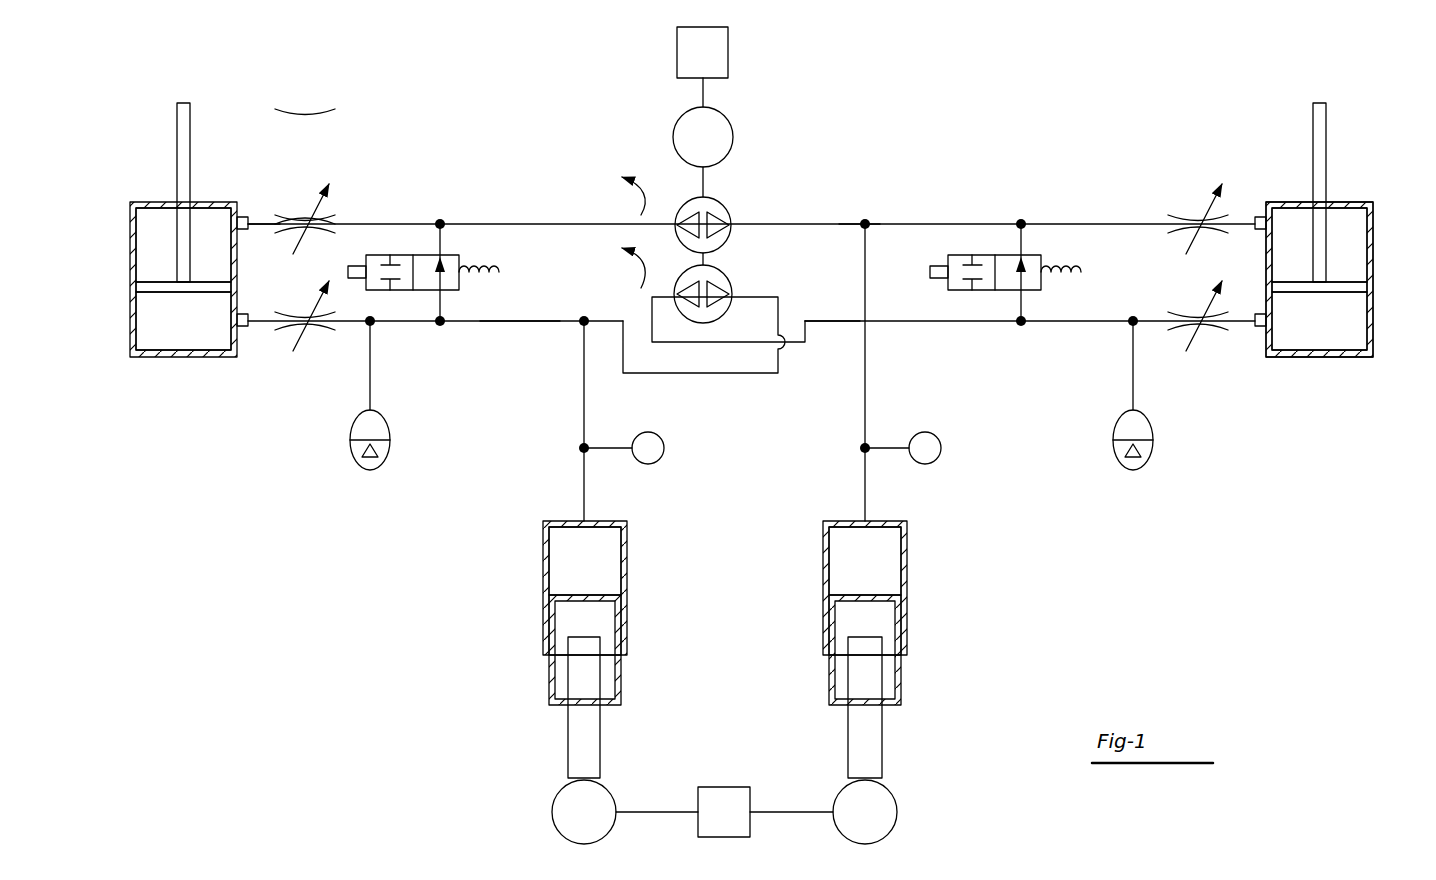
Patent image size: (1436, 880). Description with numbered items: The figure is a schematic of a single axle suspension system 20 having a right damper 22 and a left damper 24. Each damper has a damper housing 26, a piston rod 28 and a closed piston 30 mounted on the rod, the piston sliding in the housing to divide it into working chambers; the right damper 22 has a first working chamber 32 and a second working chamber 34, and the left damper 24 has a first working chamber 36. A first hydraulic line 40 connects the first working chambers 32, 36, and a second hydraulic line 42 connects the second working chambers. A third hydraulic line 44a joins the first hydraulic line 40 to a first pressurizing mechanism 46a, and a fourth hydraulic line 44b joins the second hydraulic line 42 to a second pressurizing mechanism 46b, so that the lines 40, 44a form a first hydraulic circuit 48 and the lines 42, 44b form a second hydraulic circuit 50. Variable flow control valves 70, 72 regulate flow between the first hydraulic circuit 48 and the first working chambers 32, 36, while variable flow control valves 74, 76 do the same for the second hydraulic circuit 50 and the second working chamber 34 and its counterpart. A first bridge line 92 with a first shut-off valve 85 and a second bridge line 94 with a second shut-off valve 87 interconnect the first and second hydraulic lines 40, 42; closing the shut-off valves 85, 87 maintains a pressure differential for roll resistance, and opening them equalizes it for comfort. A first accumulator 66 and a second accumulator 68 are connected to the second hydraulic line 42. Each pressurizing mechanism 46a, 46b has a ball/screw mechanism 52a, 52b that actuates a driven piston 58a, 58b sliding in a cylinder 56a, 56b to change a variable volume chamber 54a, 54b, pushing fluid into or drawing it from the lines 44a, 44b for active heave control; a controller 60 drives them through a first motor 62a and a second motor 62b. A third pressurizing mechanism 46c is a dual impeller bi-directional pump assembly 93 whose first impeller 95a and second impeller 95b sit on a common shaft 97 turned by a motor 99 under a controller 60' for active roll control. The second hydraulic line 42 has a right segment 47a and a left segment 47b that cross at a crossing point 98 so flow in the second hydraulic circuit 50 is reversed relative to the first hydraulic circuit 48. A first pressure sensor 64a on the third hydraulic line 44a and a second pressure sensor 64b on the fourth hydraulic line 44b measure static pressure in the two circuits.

The single axle suspension system 20 is at (268, 562).
The right damper 22 is at (1348, 246).
The left damper 24 is at (751, 253).
The damper housing 26 is at (135, 325).
The piston rod 28 is at (177, 110).
The piston 30 is at (150, 290).
The first working chamber of right damper 32 is at (1355, 248).
The second working chamber of right damper 34 is at (152, 340).
The first working chamber of left damper 36 is at (150, 247).
The first hydraulic line 40 is at (898, 222).
The second hydraulic line 42 is at (1066, 322).
The third hydraulic line 44a is at (865, 472).
The fourth hydraulic line 44b is at (584, 390).
The first pressurizing mechanism 46a is at (859, 682).
The second pressurizing mechanism 46b is at (581, 682).
The third pressurizing mechanism 46c is at (683, 175).
The right segment of second hydraulic line 47a is at (837, 321).
The left segment of second hydraulic line 47b is at (532, 321).
The first hydraulic circuit 48 is at (839, 220).
The second hydraulic circuit 50 is at (963, 326).
The ball/screw mechanism of first pressurizing mechanism 52a is at (875, 752).
The ball/screw mechanism of second pressurizing mechanism 52b is at (575, 752).
The variable volume chamber of first pressurizing mechanism 54a is at (880, 552).
The variable volume chamber of second pressurizing mechanism 54b is at (568, 550).
The cylinder of first pressurizing mechanism 56a is at (907, 580).
The cylinder of second pressurizing mechanism 56b is at (544, 580).
The driven piston of first pressurizing mechanism 58a is at (900, 668).
The driven piston of second pressurizing mechanism 58b is at (548, 668).
The controller 60 is at (724, 775).
The controller 60' is at (740, 52).
The first motor 62a is at (885, 812).
The second motor 62b is at (566, 812).
The first pressure sensor 64a is at (922, 458).
The second pressure sensor 64b is at (644, 434).
The first accumulator 66 is at (352, 455).
The second accumulator 68 is at (1155, 450).
The first variable flow control valve 70 is at (1180, 218).
The second variable flow control valve 72 is at (300, 218).
The third variable flow control valve 74 is at (1220, 330).
The fourth variable flow control valve 76 is at (296, 328).
The first shut-off valve 85 is at (985, 255).
The second shut-off valve 87 is at (400, 255).
The first bridge line 92 is at (1022, 240).
The dual impeller bi-directional pump assembly 93 is at (673, 256).
The second bridge line 94 is at (442, 240).
The first impeller 95a is at (726, 208).
The second impeller 95b is at (726, 287).
The common shaft 97 is at (703, 172).
The crossing point 98 is at (781, 350).
The motor 99 is at (717, 135).